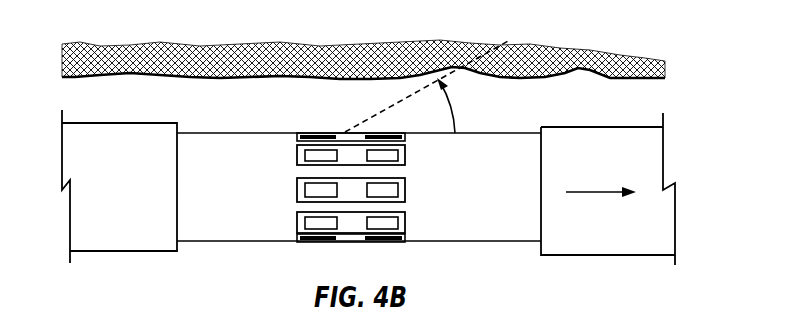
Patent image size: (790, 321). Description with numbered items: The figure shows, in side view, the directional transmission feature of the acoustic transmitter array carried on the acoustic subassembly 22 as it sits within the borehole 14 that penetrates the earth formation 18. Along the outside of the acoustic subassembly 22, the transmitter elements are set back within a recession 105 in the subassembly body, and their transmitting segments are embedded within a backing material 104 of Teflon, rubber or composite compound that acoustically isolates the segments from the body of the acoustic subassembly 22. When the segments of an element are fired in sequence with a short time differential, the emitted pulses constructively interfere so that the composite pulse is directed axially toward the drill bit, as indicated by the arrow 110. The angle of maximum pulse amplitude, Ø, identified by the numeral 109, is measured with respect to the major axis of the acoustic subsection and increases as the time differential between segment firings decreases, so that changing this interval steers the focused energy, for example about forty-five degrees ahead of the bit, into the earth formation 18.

The earth formation 18 is at (311, 55).
The borehole 14 is at (230, 78).
The acoustic subassembly 22 is at (138, 201).
The backing material 104 is at (346, 181).
The recession 105 is at (406, 187).
The angle of maximum pulse amplitude 109 is at (458, 108).
The arrow indicating direction toward drill bit 110 is at (578, 195).